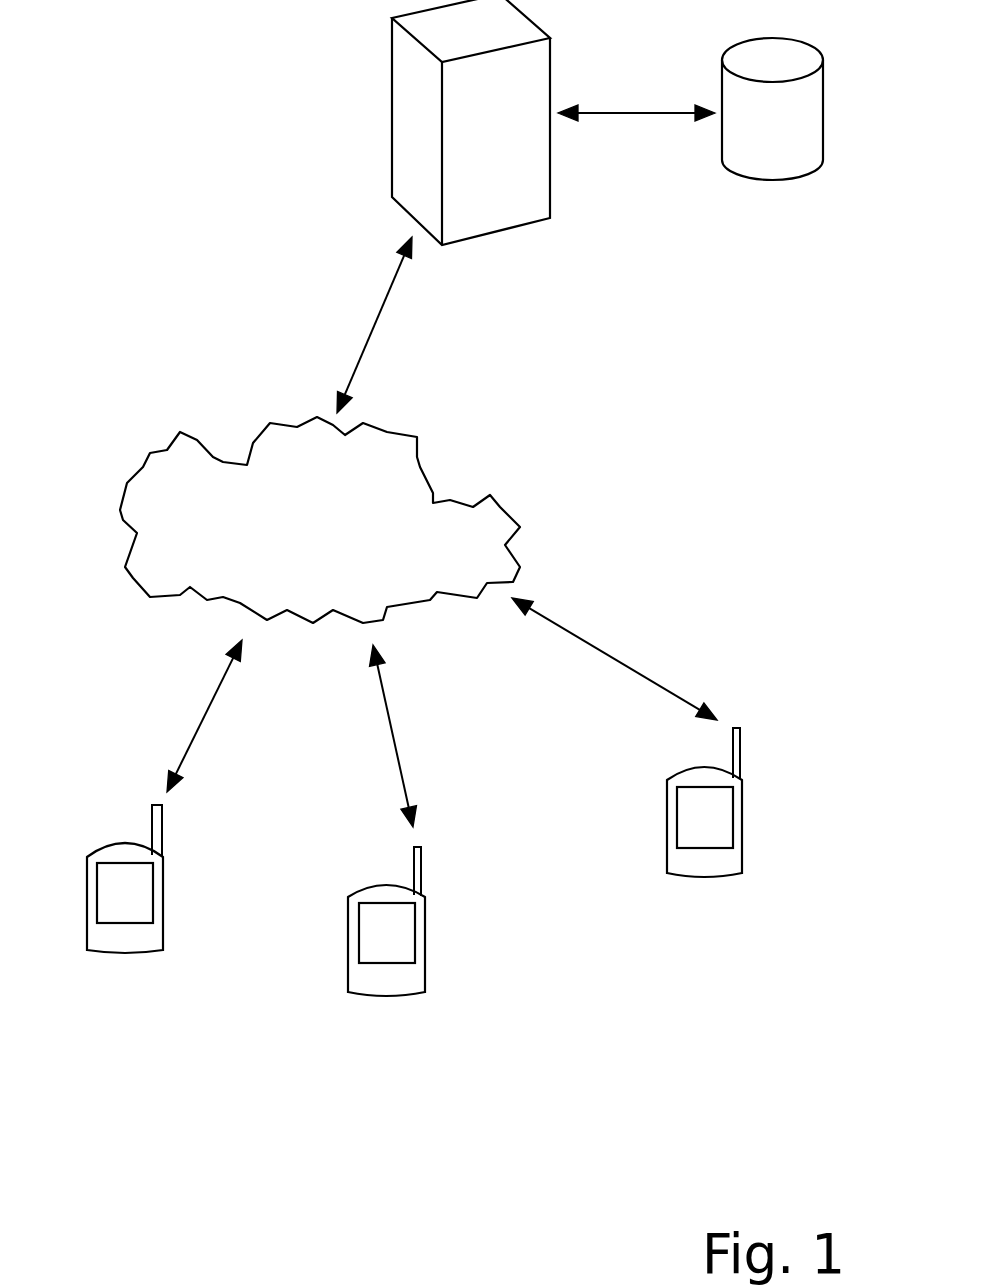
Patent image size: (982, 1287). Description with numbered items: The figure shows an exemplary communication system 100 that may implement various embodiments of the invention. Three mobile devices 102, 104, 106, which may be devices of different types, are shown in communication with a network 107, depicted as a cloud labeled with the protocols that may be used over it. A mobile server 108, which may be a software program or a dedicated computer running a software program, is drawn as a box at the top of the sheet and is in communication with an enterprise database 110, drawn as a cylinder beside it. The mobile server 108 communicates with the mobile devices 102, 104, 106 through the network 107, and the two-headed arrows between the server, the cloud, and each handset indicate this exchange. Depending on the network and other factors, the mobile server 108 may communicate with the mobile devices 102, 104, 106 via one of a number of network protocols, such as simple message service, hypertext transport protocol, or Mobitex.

The communication system 100 is at (333, 1213).
The mobile device 102 is at (108, 958).
The mobile device 104 is at (373, 1000).
The mobile device 106 is at (705, 885).
The network 107 is at (513, 517).
The mobile server 108 is at (372, 65).
The enterprise database 110 is at (777, 190).